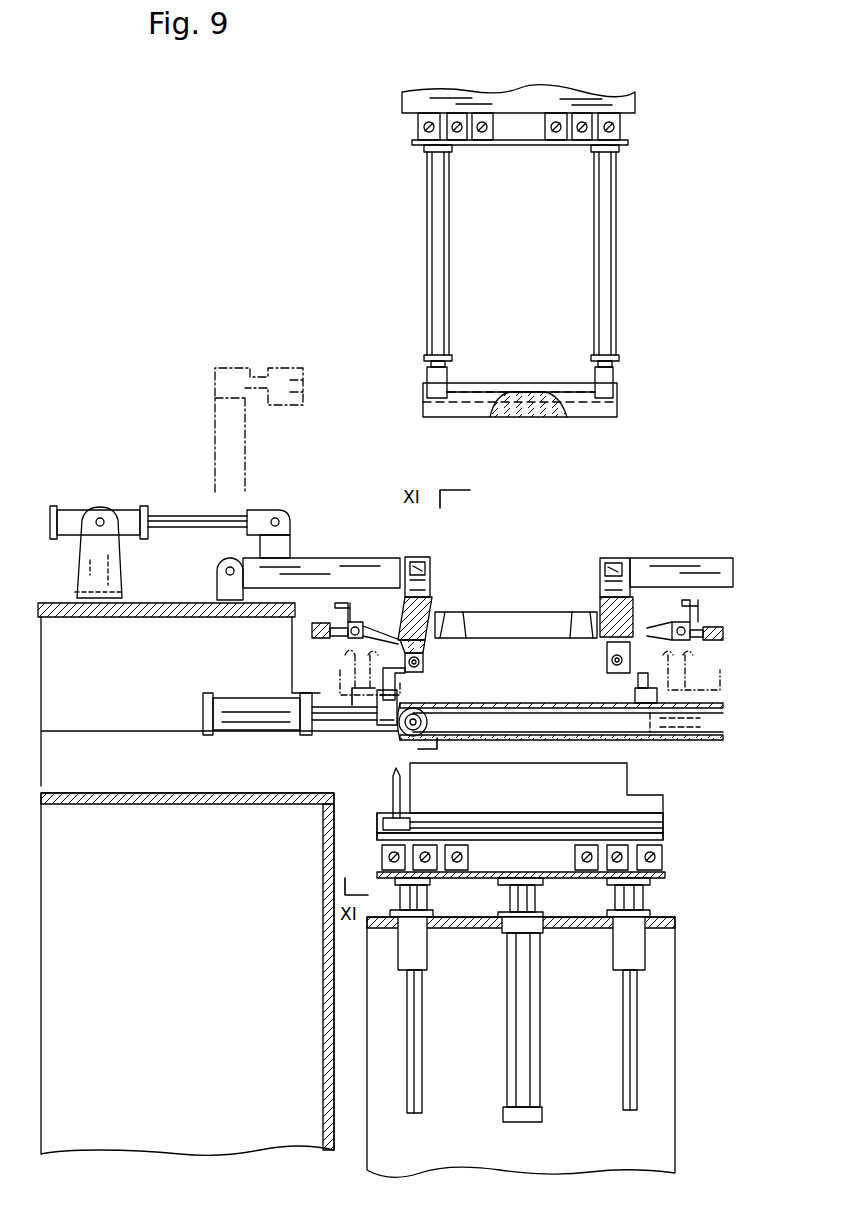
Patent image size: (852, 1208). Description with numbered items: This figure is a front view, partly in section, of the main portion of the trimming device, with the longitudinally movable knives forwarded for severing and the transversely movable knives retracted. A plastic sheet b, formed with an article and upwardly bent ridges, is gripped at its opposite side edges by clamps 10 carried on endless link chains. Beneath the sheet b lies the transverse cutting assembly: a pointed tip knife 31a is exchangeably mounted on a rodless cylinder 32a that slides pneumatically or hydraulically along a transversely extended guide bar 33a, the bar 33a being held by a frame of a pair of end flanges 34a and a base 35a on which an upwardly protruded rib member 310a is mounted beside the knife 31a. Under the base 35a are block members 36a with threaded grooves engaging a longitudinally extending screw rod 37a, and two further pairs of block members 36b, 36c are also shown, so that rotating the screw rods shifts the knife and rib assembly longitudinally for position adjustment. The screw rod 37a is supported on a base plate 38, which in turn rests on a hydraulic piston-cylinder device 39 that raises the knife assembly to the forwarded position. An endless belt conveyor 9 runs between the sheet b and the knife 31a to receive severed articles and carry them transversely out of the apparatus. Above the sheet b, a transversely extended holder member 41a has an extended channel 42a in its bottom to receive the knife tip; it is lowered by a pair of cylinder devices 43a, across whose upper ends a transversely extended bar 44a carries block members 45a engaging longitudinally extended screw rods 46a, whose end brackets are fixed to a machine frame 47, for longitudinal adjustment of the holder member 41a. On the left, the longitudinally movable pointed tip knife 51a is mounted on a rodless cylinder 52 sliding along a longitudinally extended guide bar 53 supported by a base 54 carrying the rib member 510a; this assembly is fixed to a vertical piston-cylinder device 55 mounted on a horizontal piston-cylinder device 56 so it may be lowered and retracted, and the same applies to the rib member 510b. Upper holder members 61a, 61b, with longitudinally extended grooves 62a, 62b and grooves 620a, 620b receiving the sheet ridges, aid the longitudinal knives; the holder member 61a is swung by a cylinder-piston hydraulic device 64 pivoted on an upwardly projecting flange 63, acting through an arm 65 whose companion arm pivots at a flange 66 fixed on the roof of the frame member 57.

The machine frame 47 is at (521, 92).
The block member 45a is at (430, 124).
The screw rod 46a is at (458, 124).
The transversely extended bar 44a is at (506, 146).
The hydraulic piston-cylinder device 43a is at (427, 265).
The holder member 41a is at (462, 398).
The extended channel 42a is at (538, 408).
The cylinder-piston hydraulic device 64 is at (80, 517).
The upwardly projecting flange 63 is at (92, 565).
The frame member 57 is at (146, 610).
The arm 65 is at (292, 530).
The upwardly projecting flange 66 is at (217, 584).
The holder member 61a is at (428, 598).
The holder member 61b is at (606, 597).
The longitudinally extended groove 620a is at (425, 637).
The longitudinally extended groove 620b is at (606, 632).
The plastic sheet b is at (550, 675).
The rib member 510a is at (372, 641).
The rib member 510b is at (690, 641).
The clamp means 10 is at (724, 614).
The knife 51a is at (425, 642).
The longitudinally extended groove 62a is at (432, 648).
The longitudinally extended groove 62b is at (607, 657).
The rodless cylinder 52 is at (424, 668).
The guide bar 53 is at (420, 672).
The base 54 is at (398, 676).
The endless belt conveyor 9 is at (548, 710).
The piston-cylinder device 55 is at (386, 722).
The piston-cylinder device 56 is at (258, 728).
The rib member 310a is at (630, 765).
The knife 31a is at (402, 775).
The rodless cylinder 32a is at (408, 822).
The guide bar 33a is at (540, 822).
The end flange 34a is at (378, 820).
The base 35a is at (665, 838).
The block member 36a is at (382, 858).
The block member 36b is at (430, 871).
The block member 36c is at (468, 871).
The screw rod 37a is at (396, 856).
The base plate 38 is at (548, 879).
The hydraulic piston-cylinder device 39 is at (512, 1035).